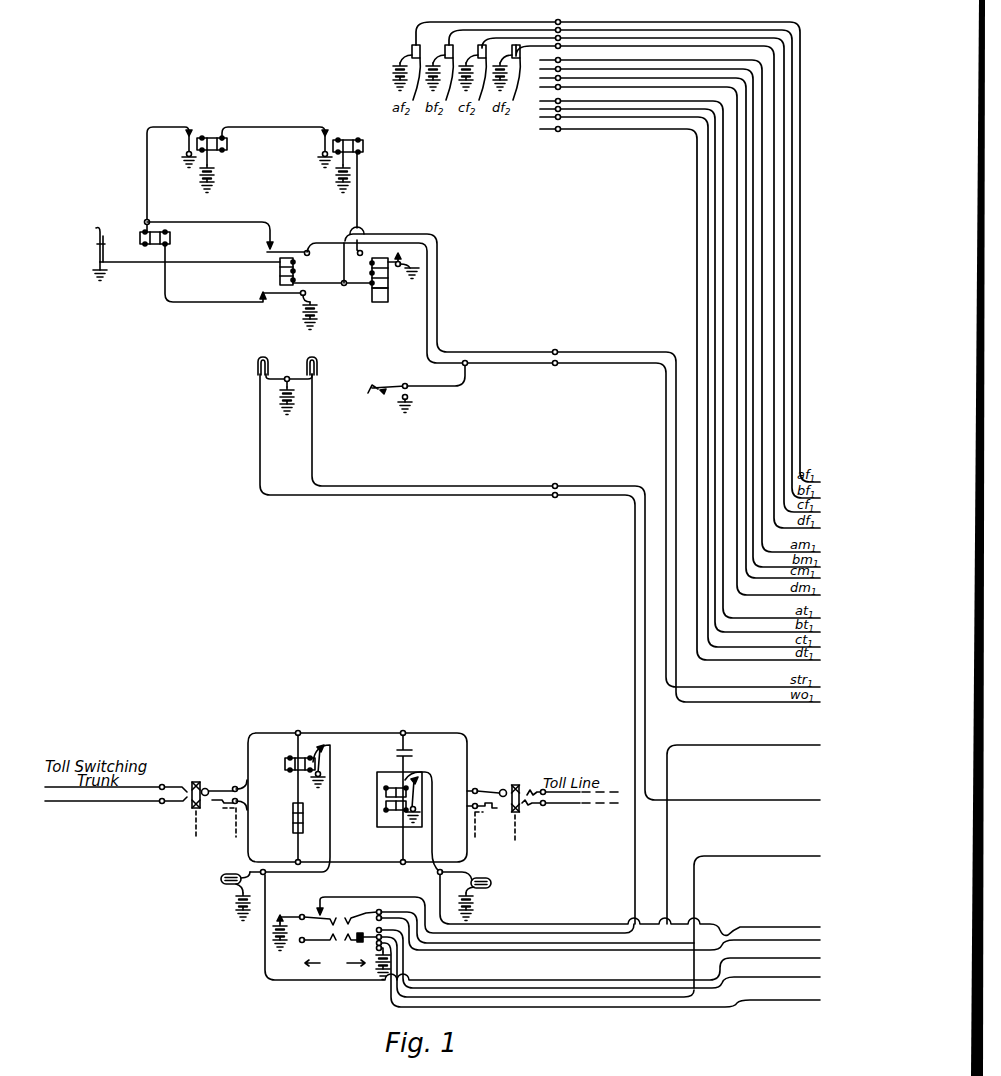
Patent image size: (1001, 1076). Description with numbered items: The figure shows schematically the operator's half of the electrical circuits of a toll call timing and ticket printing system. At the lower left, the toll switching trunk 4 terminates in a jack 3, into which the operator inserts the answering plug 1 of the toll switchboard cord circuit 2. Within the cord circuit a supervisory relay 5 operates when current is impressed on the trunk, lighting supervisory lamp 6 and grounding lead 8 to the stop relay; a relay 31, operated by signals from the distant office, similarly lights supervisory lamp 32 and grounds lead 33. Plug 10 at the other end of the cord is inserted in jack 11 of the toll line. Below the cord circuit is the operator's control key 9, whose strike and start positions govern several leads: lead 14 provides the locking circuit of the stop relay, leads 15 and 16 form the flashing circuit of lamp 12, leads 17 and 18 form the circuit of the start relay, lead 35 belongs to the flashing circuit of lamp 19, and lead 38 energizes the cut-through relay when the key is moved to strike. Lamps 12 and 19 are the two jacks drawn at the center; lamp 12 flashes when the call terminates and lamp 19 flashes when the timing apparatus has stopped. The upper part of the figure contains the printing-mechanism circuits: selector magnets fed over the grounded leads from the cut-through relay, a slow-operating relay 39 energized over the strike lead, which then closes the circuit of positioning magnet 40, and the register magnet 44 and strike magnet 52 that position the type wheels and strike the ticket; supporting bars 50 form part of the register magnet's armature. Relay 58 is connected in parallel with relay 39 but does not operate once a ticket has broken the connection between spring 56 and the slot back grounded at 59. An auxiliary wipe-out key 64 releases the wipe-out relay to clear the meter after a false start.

The answering plug 1 is at (218, 786).
The toll switchboard cord circuit 2 is at (348, 734).
The jack 3 is at (183, 781).
The toll switching trunk 4 is at (80, 801).
The supervisory relay 5 is at (290, 758).
The supervisory lamp 6 is at (218, 880).
The lead 8 is at (790, 957).
The operator's control key 9 is at (338, 930).
The plug 10 is at (497, 790).
The jack 11 is at (529, 784).
The lamp 12 is at (258, 366).
The lead 14 is at (790, 976).
The lead 15 is at (258, 452).
The lead 16 is at (790, 932).
The lead 17 is at (790, 862).
The lead 18 is at (790, 1000).
The lamp 19 is at (315, 366).
The relay 31 is at (377, 807).
The supervisory lamp 32 is at (491, 883).
The lead 33 is at (790, 939).
The lead 35 is at (314, 452).
The lead 38 is at (790, 751).
The relay 39 is at (389, 279).
The positioning magnet 40 is at (364, 145).
The register magnet 44 is at (228, 145).
The supporting bars 50 is at (380, 295).
The strike magnet 52 is at (173, 238).
The spring 56 is at (105, 248).
The relay 58 is at (279, 275).
The ground 59 is at (93, 279).
The auxiliary wipe-out key 64 is at (377, 385).